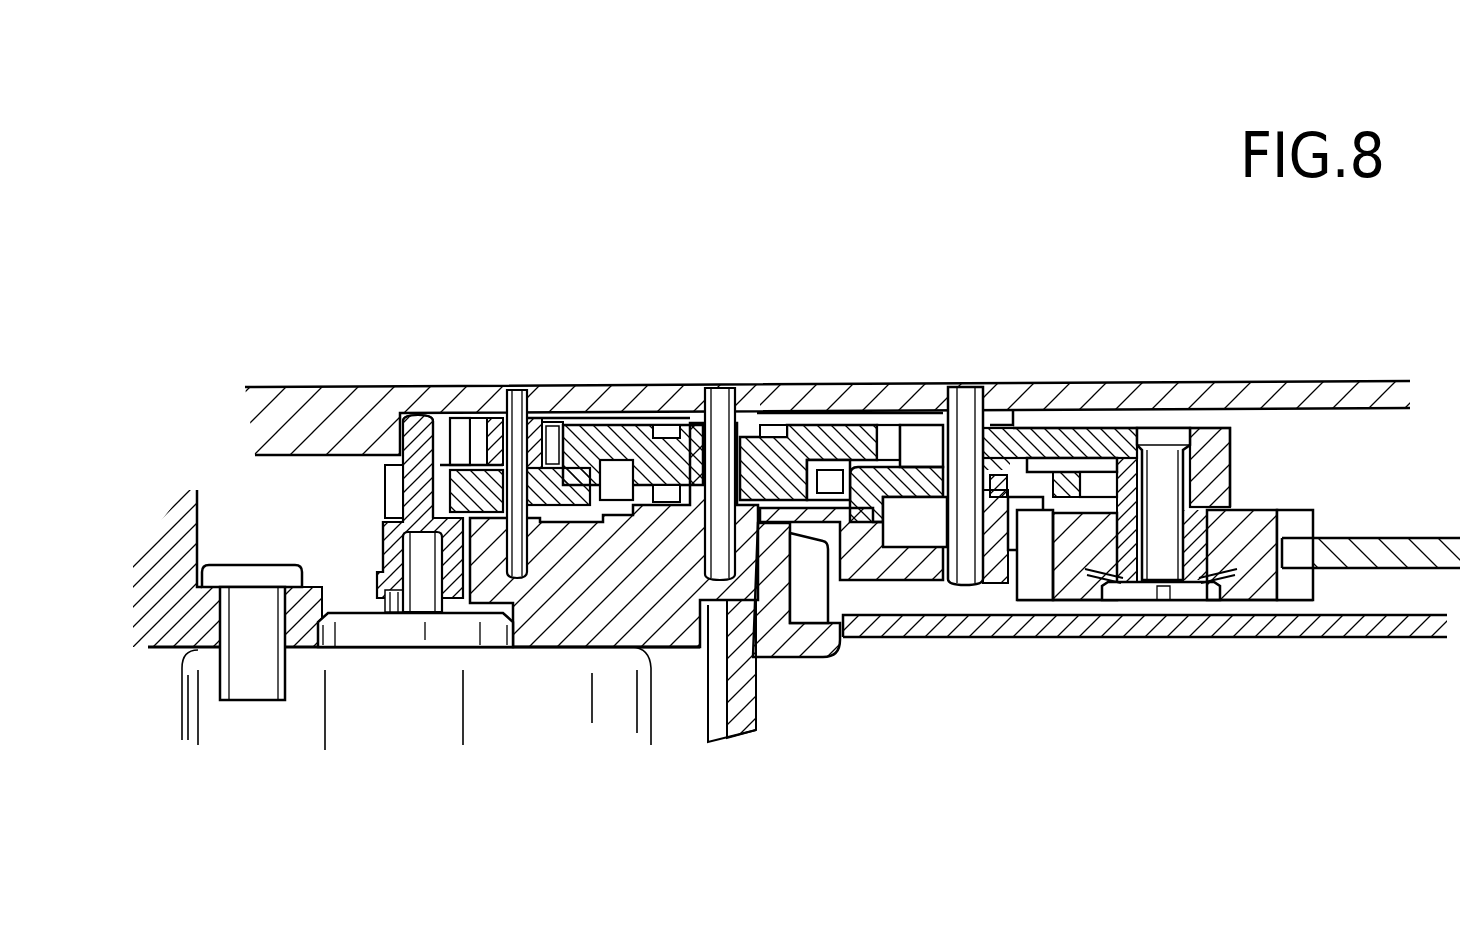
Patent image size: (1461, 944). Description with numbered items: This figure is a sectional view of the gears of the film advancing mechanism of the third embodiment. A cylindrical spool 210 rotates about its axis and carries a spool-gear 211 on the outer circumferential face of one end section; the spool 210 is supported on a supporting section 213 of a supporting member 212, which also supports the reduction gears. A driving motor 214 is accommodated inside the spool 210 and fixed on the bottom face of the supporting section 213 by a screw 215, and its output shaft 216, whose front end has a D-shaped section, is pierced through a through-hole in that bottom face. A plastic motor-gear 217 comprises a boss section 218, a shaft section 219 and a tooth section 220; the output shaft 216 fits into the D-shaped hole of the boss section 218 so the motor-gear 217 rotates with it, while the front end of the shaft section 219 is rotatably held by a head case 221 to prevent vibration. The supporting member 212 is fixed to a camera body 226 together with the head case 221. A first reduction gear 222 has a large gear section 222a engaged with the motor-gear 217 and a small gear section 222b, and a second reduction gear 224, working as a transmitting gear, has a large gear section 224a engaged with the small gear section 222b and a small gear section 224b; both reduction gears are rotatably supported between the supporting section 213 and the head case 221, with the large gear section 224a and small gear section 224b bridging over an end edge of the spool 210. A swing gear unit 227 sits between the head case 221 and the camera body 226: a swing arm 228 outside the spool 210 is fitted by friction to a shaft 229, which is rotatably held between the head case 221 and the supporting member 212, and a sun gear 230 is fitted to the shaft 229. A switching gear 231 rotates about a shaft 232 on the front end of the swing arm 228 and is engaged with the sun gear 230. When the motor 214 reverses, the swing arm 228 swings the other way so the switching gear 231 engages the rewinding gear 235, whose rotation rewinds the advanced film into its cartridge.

The spool 210 is at (743, 708).
The spool-gear 211 is at (817, 610).
The supporting member 212 is at (937, 585).
The supporting section 213 is at (645, 440).
The driving motor 214 is at (648, 723).
The screw 215 is at (237, 565).
The output shaft 216 is at (410, 563).
The motor-gear 217 is at (440, 243).
The boss section 218 is at (385, 510).
The shaft section 219 is at (403, 413).
The tooth section 220 is at (440, 450).
The head case 221 is at (325, 392).
The first reduction gear 222 is at (542, 316).
The large gear section 222a is at (550, 475).
The small gear section 222b is at (477, 422).
The second reduction gear 224 is at (720, 265).
The large gear section 224a is at (677, 468).
The small gear section 224b is at (705, 400).
The camera body 226 is at (1027, 623).
The swing gear unit 227 is at (1107, 365).
The swing arm 228 is at (1050, 433).
The shaft 229 is at (963, 390).
The sun gear 230 is at (925, 477).
The switching gear 231 is at (1250, 510).
The shaft 232 is at (1165, 450).
The rewinding gear 235 is at (1358, 540).